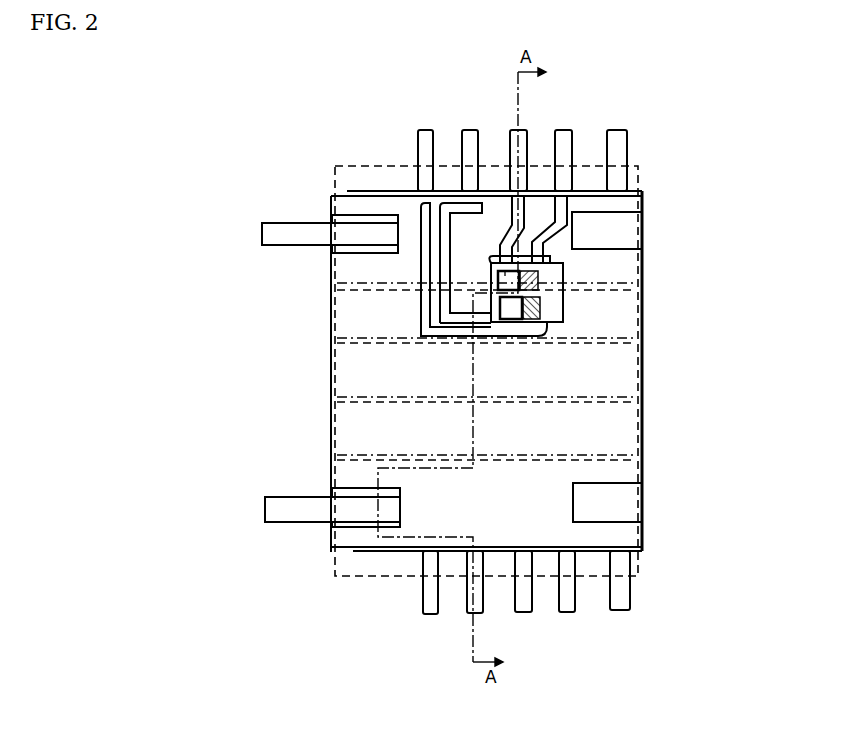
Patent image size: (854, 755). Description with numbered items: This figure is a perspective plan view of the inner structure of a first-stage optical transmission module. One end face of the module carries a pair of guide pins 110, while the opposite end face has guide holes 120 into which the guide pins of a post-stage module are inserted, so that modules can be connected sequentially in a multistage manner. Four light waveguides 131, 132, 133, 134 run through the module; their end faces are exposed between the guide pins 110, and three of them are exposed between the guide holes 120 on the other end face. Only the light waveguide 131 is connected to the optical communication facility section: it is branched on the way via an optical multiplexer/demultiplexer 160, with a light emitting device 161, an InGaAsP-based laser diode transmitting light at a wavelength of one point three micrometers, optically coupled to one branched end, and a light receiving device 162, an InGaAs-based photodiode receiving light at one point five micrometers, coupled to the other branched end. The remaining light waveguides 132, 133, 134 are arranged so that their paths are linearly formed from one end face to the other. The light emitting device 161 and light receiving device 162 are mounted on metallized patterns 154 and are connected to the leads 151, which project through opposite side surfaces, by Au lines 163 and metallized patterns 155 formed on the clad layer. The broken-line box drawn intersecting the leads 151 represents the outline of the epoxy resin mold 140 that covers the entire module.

The guide pins 110 is at (298, 523).
The guide holes 120 is at (617, 521).
The light waveguide 131 is at (350, 285).
The light waveguide 132 is at (357, 343).
The light waveguide 133 is at (373, 399).
The light waveguide 134 is at (357, 456).
The resin mold 140 is at (355, 166).
The leads 151 is at (563, 612).
The metallized patterns 154 is at (541, 290).
The metallized patterns 155 is at (425, 305).
The optical multiplexer/demultiplexer 160 is at (410, 289).
The light emitting device 161 is at (533, 242).
The light receiving device 162 is at (515, 310).
The Au lines 163 is at (559, 181).